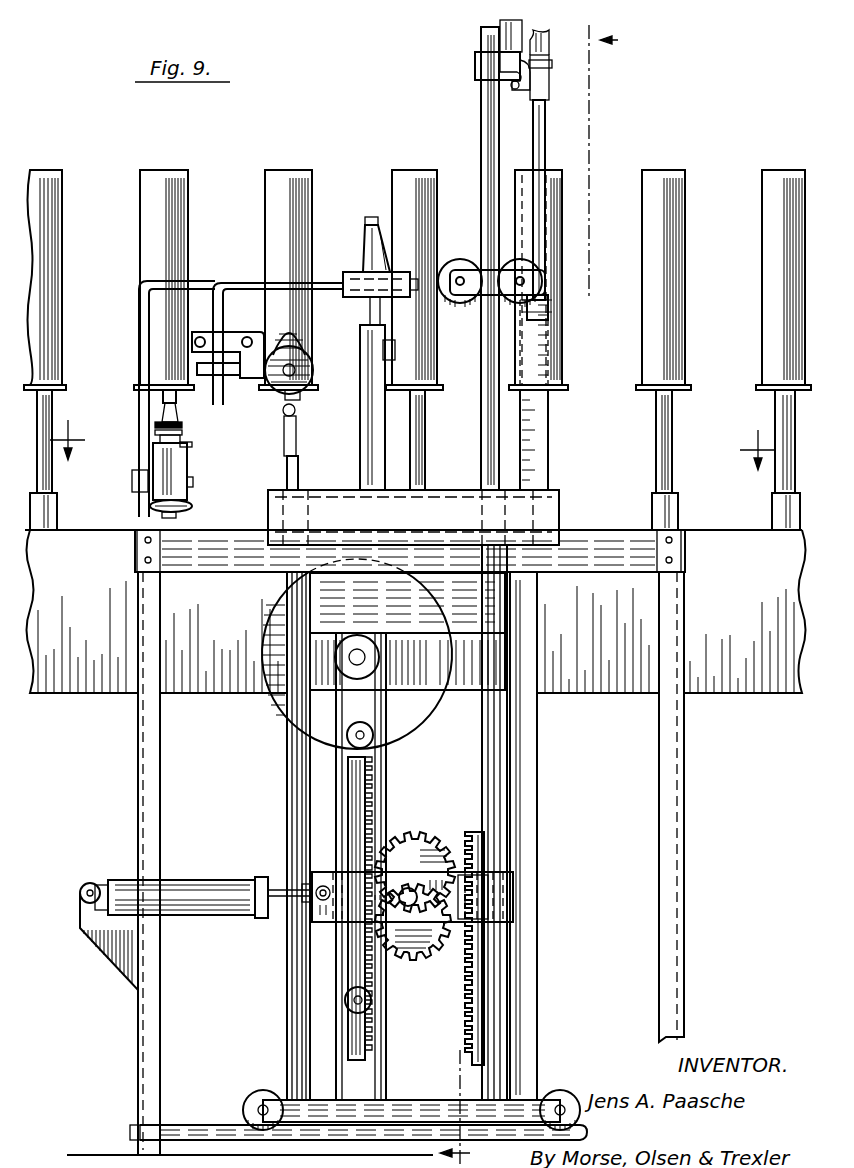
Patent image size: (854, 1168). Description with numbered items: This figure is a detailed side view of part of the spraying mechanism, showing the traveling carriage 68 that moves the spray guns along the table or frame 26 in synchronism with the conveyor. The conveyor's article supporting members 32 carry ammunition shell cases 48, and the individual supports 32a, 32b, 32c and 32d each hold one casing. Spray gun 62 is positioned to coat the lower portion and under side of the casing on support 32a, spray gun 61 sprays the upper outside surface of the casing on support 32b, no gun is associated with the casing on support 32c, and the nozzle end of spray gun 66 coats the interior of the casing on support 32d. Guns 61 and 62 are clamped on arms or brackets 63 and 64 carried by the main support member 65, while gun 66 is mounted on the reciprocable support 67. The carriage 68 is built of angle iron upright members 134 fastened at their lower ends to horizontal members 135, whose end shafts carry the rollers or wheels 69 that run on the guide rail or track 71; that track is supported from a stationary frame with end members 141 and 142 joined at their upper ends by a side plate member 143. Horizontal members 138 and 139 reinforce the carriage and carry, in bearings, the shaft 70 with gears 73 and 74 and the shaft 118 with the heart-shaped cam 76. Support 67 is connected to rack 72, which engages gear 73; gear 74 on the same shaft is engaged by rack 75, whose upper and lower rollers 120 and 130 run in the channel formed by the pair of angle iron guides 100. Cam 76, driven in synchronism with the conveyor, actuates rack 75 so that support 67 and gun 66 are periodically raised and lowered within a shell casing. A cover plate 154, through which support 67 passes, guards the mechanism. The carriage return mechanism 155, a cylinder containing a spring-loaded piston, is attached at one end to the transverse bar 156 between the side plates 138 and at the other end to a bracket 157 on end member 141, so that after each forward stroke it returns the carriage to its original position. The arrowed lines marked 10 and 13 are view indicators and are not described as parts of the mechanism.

The spray apparatus 10 is at (412, 434).
The section line 13 is at (537, 596).
The frame 26 is at (733, 693).
The article supporting members 32 is at (662, 470).
The support 32a is at (172, 405).
The support 32b is at (248, 482).
The support 32c is at (418, 470).
The support 32d is at (548, 458).
The ammunition shell cases 48 is at (650, 315).
The spray gun 61 is at (283, 380).
The spray gun 62 is at (172, 473).
The arm or bracket 63 is at (240, 282).
The arm or bracket 64 is at (205, 280).
The main support member 65 is at (377, 410).
The spray gun 66 is at (545, 145).
The reciprocable support 67 is at (482, 122).
The movable carriage 68 is at (530, 765).
The wheels 69 is at (262, 1090).
The shaft 70 is at (417, 903).
The track 71 is at (182, 1125).
The rack 72 is at (478, 968).
The gear 73 is at (408, 945).
The gear 74 is at (408, 860).
The rack 75 is at (372, 780).
The heart-shaped cam 76 is at (295, 700).
The angle iron guides 100 is at (340, 1040).
The shaft 118 is at (360, 655).
The upper roller 120 is at (345, 1001).
The lower roller 130 is at (374, 740).
The angle iron upright members 134 is at (287, 785).
The horizontal members 135 is at (420, 1100).
The horizontal members 138 is at (478, 883).
The horizontal cross member 139 is at (485, 665).
The end member 141 is at (157, 1045).
The end member 142 is at (668, 980).
The side plate member 143 is at (608, 560).
The cover plate 154 is at (270, 515).
The carriage return mechanism 155 is at (212, 915).
The transverse bar 156 is at (316, 893).
The bracket 157 is at (105, 935).